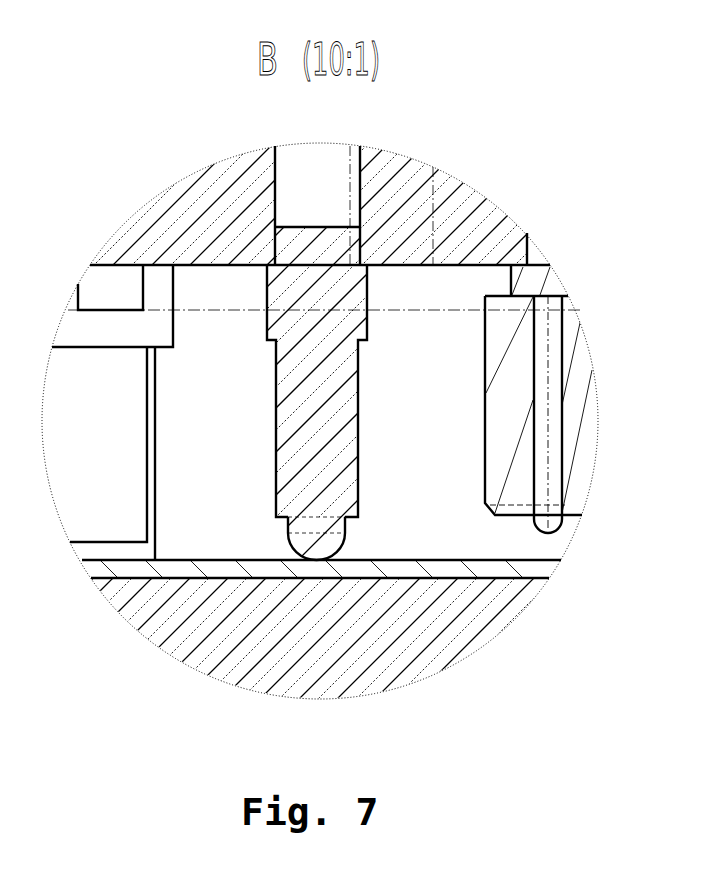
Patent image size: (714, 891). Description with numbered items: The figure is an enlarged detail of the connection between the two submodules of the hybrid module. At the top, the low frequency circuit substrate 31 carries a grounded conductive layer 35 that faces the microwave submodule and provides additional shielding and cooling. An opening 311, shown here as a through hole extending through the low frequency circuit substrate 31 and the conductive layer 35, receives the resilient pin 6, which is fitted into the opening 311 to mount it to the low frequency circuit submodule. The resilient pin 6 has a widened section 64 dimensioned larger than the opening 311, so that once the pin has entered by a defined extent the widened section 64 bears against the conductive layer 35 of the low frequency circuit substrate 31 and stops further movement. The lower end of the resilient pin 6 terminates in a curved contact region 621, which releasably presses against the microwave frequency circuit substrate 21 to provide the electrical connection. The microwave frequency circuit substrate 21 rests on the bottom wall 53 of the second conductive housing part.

The low frequency circuit substrate 31 is at (339, 420).
The conductive layer 35 is at (145, 252).
The opening 311 is at (331, 192).
The resilient pin 6 is at (357, 420).
The widened section 64 is at (353, 323).
The contact region 621 is at (337, 542).
The microwave frequency circuit substrate 21 is at (177, 565).
The wall 53 is at (273, 677).